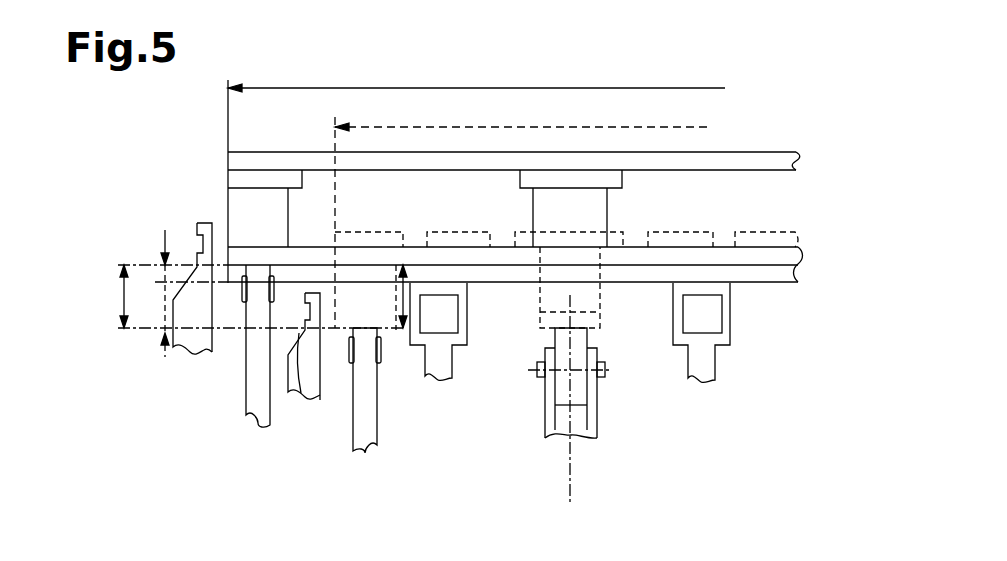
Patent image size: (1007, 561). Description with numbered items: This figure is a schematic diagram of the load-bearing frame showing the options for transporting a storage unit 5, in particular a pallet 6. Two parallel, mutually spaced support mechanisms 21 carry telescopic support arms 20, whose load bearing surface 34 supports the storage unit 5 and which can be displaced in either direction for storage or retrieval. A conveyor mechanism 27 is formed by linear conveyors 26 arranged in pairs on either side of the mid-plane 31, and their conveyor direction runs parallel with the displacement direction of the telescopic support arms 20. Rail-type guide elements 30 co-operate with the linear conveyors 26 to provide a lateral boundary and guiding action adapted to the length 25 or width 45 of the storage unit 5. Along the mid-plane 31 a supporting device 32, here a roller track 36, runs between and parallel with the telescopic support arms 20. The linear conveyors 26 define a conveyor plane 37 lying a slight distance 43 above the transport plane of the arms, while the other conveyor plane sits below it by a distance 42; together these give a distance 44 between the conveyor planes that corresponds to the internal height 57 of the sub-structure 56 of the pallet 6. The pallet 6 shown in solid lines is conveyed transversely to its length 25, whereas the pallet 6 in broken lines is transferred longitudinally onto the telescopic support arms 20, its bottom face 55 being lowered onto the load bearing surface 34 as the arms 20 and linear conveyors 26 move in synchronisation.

The storage unit 5 is at (401, 127).
The pallet 6 is at (250, 207).
The telescopic support arm 20 is at (453, 290).
The support mechanism 21 is at (440, 273).
The length 25 is at (473, 85).
The linear conveyor 26 is at (250, 412).
The conveyor mechanism 27 is at (243, 243).
The rail-type guide element 30 is at (197, 226).
The mid-plane 31 is at (580, 475).
The supporting device 32 is at (552, 468).
The load bearing surface 34 is at (255, 255).
The roller track 36 is at (563, 383).
The conveyor plane 37 is at (136, 259).
The distance 42 is at (164, 264).
The distance 43 is at (163, 308).
The distance 44 is at (124, 300).
The width 45 is at (466, 125).
The bottom face 55 is at (503, 285).
The sub-structure 56 is at (232, 302).
The internal height 57 is at (395, 332).